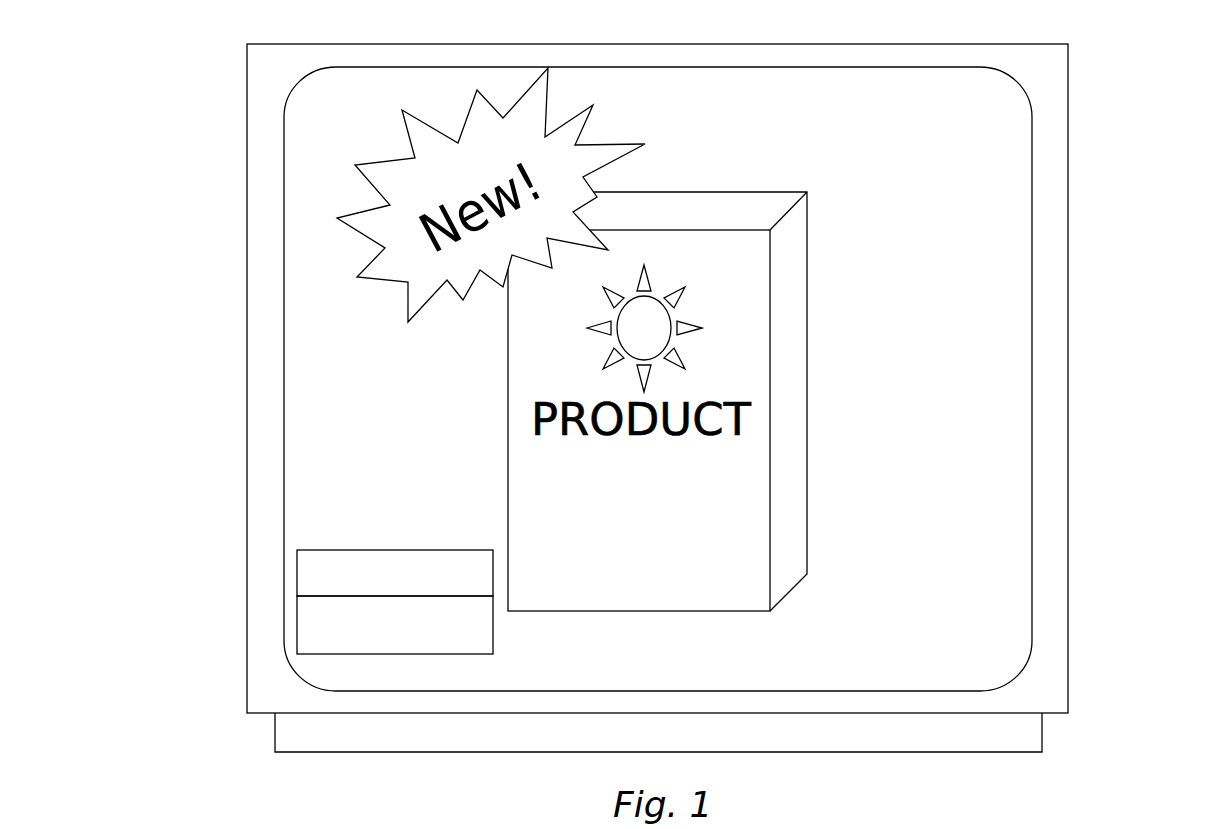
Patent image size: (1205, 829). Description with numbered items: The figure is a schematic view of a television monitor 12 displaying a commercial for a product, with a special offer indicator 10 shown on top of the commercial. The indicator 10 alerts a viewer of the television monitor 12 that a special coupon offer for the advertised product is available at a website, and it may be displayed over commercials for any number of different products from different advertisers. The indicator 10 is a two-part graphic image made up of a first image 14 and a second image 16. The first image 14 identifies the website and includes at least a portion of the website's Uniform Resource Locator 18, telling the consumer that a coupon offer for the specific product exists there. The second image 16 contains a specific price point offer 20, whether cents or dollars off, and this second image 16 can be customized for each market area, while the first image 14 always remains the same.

The special offer indicator 10 is at (342, 526).
The television monitor 12 is at (998, 200).
The first image 14 is at (327, 546).
The second image 16 is at (318, 640).
The Uniform Resource Locator 18 is at (348, 568).
The price point offer 20 is at (347, 624).